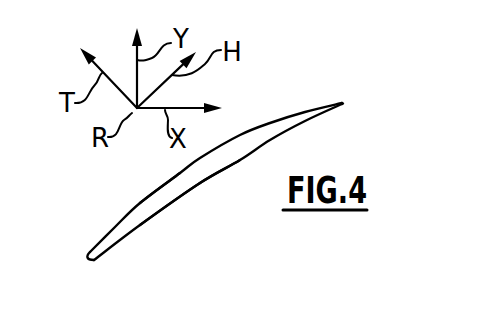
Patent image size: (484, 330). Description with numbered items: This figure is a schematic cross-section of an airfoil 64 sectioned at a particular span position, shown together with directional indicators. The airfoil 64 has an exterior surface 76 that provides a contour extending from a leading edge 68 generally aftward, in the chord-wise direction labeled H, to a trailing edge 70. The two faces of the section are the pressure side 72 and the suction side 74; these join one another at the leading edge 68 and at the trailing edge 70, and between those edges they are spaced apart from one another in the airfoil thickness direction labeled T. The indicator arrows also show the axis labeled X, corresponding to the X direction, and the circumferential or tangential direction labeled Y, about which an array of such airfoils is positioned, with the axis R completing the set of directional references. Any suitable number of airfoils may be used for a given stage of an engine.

The airfoil 64 is at (278, 98).
The leading edge 68 is at (90, 259).
The trailing edge 70 is at (343, 103).
The pressure side 72 is at (153, 220).
The suction side 74 is at (166, 182).
The exterior surface 76 is at (203, 189).